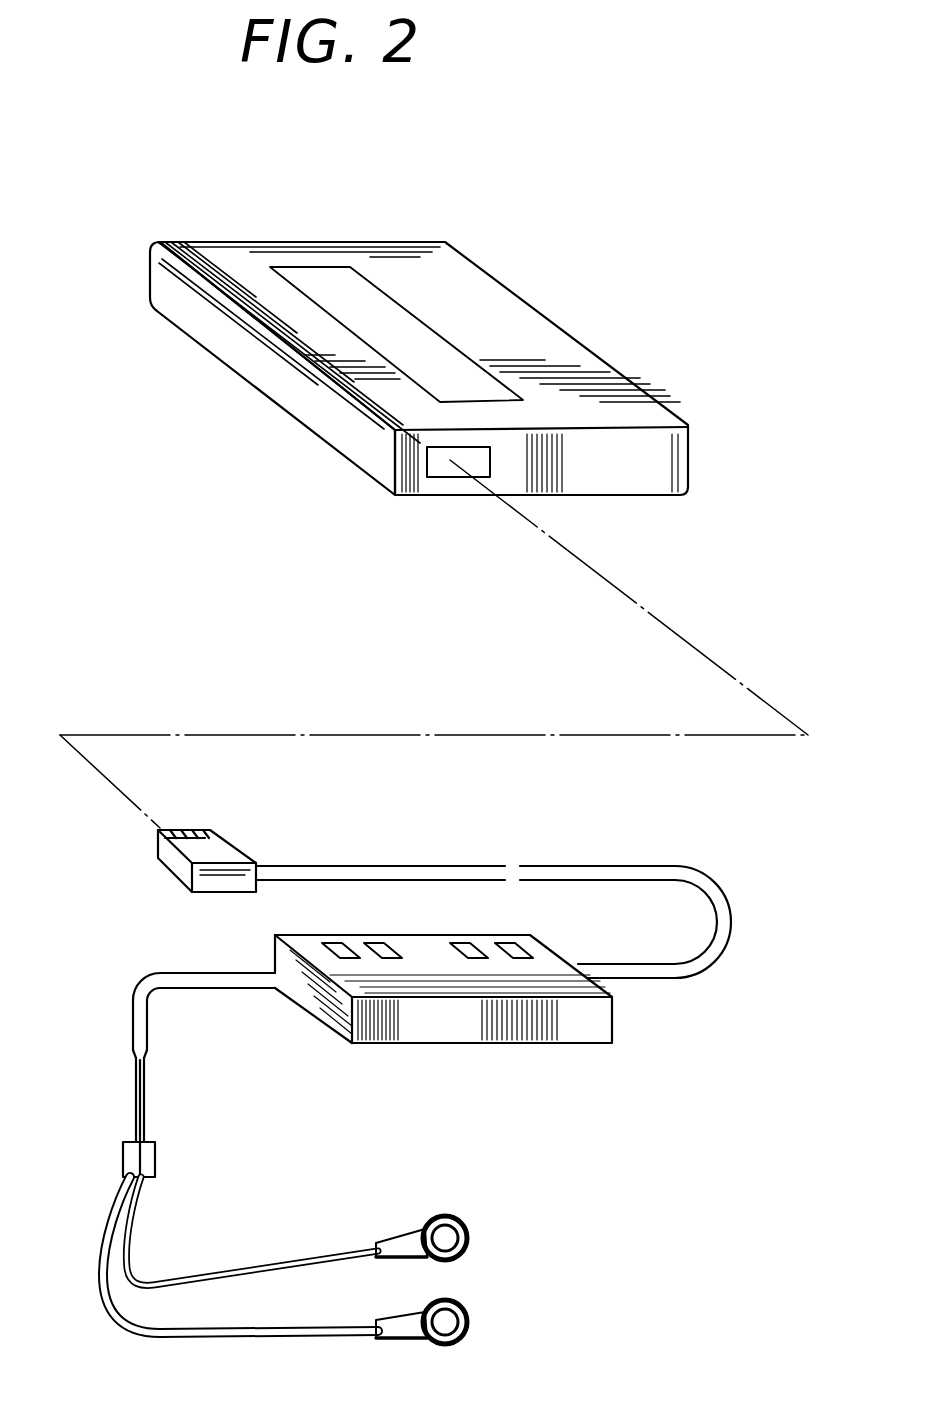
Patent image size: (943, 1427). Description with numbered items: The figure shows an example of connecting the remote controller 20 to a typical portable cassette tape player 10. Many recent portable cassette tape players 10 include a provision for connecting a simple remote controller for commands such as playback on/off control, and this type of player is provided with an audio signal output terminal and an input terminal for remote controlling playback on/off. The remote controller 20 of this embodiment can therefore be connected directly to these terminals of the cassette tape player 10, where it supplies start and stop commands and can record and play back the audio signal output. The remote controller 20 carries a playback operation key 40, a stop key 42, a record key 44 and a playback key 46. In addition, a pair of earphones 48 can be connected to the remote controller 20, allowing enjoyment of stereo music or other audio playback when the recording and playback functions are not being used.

The cassette tape player 10 is at (548, 338).
The remote controller 20 is at (568, 1028).
The playback operation key 40 is at (342, 948).
The stop key 42 is at (388, 948).
The record key 44 is at (468, 948).
The playback key 46 is at (508, 947).
The earphones 48 is at (469, 1238).